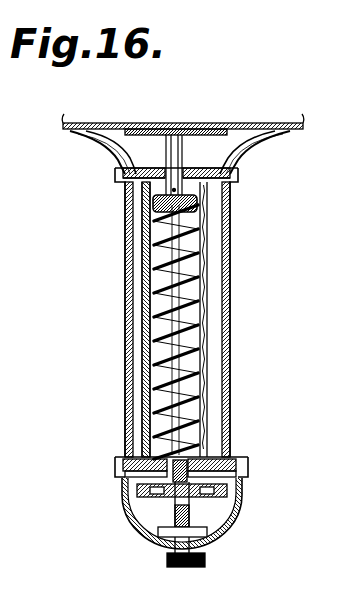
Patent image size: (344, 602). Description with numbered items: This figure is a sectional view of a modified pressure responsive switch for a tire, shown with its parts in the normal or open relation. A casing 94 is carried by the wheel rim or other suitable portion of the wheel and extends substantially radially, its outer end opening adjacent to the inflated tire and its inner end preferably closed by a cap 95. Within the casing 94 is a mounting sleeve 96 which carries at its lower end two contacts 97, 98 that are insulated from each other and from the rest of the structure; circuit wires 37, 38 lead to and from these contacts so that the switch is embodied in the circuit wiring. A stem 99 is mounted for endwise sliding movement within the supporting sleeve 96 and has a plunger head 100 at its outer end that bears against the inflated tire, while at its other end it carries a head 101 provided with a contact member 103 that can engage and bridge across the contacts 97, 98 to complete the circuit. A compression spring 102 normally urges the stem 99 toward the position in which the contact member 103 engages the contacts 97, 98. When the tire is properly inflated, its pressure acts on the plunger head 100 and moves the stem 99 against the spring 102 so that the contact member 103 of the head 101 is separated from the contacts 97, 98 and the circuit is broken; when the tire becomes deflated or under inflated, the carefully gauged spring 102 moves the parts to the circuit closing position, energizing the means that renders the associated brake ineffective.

The circuit wire 37 is at (68, 134).
The circuit wire 38 is at (292, 132).
The casing 94 is at (124, 196).
The cap 95 is at (234, 524).
The mounting sleeve 96 is at (146, 312).
The contact 97 is at (125, 484).
The contact 98 is at (240, 484).
The stem 99 is at (168, 158).
The plunger head 100 is at (189, 123).
The head 101 is at (160, 530).
The compression spring 102 is at (212, 293).
The contact member 103 is at (150, 493).